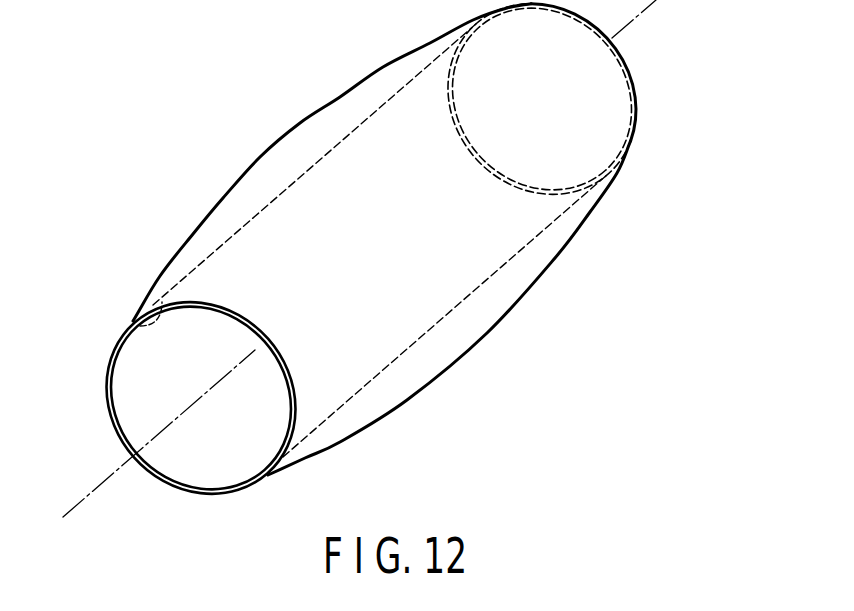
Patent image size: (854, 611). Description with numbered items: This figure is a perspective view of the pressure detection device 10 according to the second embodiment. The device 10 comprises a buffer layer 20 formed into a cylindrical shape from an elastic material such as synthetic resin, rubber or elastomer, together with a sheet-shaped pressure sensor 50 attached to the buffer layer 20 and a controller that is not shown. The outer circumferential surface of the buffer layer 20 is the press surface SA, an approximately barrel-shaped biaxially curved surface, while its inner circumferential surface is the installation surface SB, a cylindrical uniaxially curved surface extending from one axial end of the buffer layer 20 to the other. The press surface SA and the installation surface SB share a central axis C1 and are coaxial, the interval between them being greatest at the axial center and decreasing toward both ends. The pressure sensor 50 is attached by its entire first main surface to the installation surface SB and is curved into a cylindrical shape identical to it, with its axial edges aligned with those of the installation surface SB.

The pressure detection device 10 is at (393, 274).
The buffer layer 20 is at (222, 199).
The pressure sensor 50 is at (212, 466).
The press surface SA is at (487, 333).
The installation surface SB is at (133, 320).
The central axis C1 is at (683, 0).